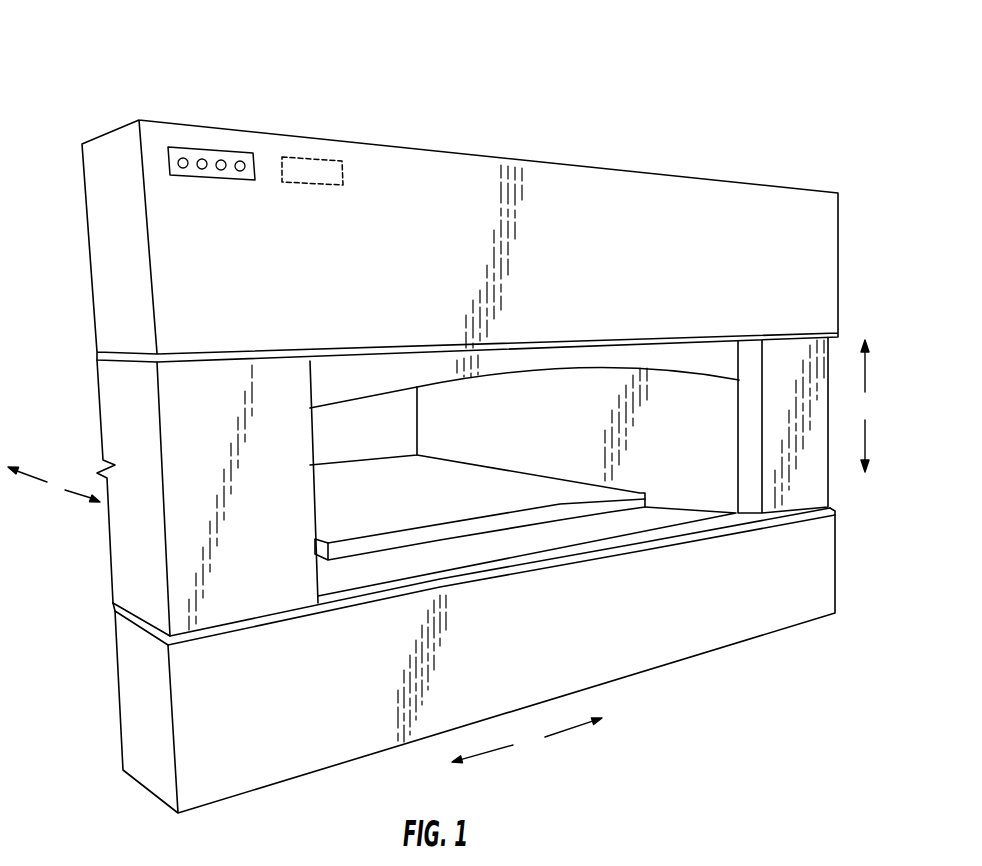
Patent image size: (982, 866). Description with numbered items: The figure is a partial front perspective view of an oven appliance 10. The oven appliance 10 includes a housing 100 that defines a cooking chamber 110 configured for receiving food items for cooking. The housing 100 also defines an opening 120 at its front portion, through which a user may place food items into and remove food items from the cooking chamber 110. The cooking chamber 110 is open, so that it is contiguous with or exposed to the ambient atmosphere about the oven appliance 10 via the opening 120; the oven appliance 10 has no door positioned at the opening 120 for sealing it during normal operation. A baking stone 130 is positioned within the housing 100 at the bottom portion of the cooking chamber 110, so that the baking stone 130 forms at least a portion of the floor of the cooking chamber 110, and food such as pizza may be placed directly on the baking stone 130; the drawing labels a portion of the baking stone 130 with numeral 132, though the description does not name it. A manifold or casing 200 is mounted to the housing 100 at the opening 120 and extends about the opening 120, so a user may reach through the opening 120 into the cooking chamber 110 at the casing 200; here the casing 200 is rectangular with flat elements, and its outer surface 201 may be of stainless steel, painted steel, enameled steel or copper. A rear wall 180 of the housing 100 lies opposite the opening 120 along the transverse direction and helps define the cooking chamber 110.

The oven appliance 10 is at (148, 96).
The casing 200 is at (817, 248).
The outer surface 201 is at (781, 597).
The housing 100 is at (328, 580).
The cooking chamber 110 is at (397, 405).
The opening 120 is at (508, 562).
The baking stone 130 is at (376, 545).
The cooking surface of platform 132 is at (338, 520).
The rear wall 180 is at (358, 422).